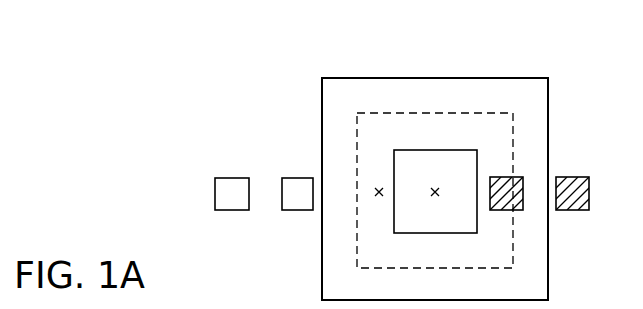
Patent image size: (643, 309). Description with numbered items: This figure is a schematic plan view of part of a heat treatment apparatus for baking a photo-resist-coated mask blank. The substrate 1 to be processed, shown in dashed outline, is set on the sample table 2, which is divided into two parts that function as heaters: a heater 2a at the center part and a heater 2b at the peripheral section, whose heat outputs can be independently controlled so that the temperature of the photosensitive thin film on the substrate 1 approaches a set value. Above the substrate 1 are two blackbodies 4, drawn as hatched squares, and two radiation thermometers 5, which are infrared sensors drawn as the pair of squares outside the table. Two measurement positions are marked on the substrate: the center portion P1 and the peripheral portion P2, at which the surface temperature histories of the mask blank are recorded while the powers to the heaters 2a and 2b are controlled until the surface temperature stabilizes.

The substrate to be processed 1 is at (513, 126).
The sample table 2 is at (422, 78).
The heater at the center part 2a is at (458, 157).
The heater at the peripheral section 2b is at (548, 277).
The blackbodies 4 is at (515, 210).
The radiation thermometers 5 is at (281, 178).
The center portion P1 is at (434, 206).
The peripheral portion P2 is at (379, 206).